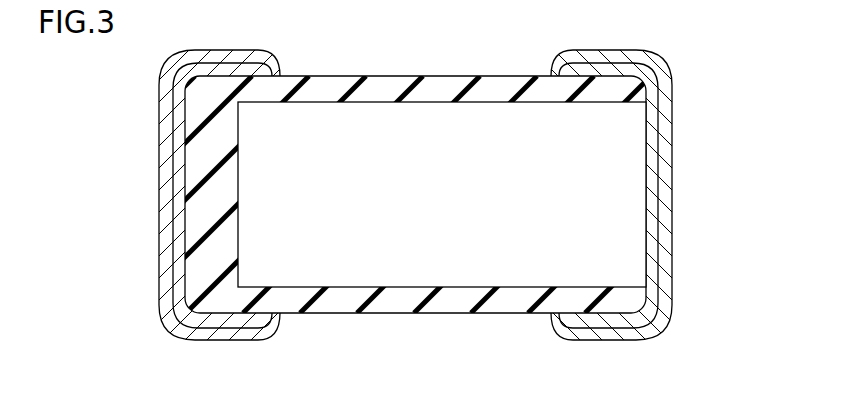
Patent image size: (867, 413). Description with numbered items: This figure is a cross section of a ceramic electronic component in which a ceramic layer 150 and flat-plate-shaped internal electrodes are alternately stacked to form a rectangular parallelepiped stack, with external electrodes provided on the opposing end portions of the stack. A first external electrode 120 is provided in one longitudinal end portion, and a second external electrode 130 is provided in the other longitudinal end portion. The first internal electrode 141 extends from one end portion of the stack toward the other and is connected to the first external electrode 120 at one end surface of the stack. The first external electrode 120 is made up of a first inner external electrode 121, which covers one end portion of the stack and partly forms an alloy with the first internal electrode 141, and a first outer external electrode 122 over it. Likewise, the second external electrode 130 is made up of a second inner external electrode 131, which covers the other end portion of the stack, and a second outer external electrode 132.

The first external electrode 120 is at (567, 195).
The first inner external electrode 121 is at (653, 203).
The first outer external electrode 122 is at (664, 155).
The second external electrode 130 is at (281, 195).
The second inner external electrode 131 is at (178, 197).
The second outer external electrode 132 is at (168, 159).
The first internal electrode 141 is at (443, 150).
The ceramic layer 150 is at (370, 90).